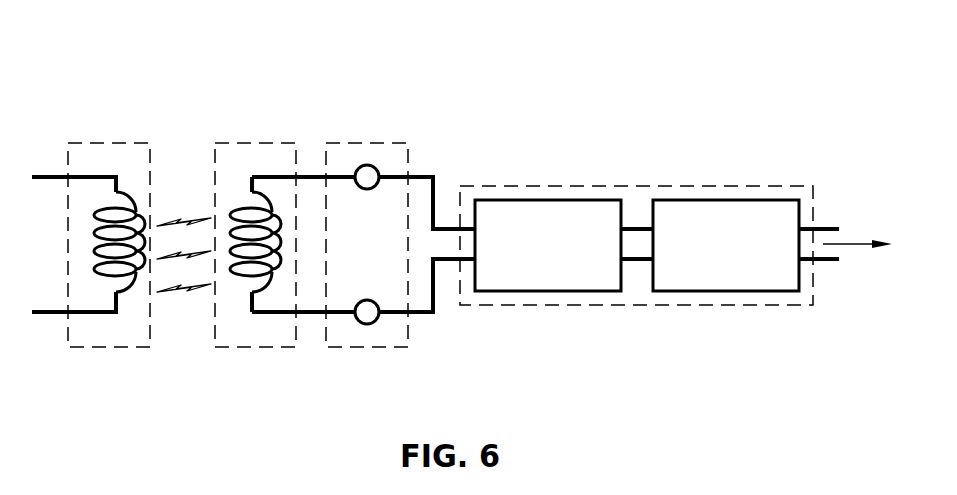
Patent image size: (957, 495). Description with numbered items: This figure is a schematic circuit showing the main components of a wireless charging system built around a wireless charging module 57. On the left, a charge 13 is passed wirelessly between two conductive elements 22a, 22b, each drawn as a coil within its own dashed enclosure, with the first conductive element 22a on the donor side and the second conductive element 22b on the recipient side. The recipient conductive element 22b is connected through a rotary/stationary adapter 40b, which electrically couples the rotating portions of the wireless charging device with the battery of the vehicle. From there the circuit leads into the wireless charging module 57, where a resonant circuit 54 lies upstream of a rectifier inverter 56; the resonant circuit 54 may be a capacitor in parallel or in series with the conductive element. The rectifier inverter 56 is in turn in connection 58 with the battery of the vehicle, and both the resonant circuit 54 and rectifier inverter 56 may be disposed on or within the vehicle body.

The charge 13 is at (190, 220).
The conductive element 22a is at (92, 364).
The conductive element 22b is at (257, 364).
The rotary/stationary adapter 40b is at (360, 165).
The resonant circuit 54 is at (500, 200).
The rectifier inverter 56 is at (668, 200).
The wireless charging module 57 is at (525, 234).
The connection 58 is at (850, 245).